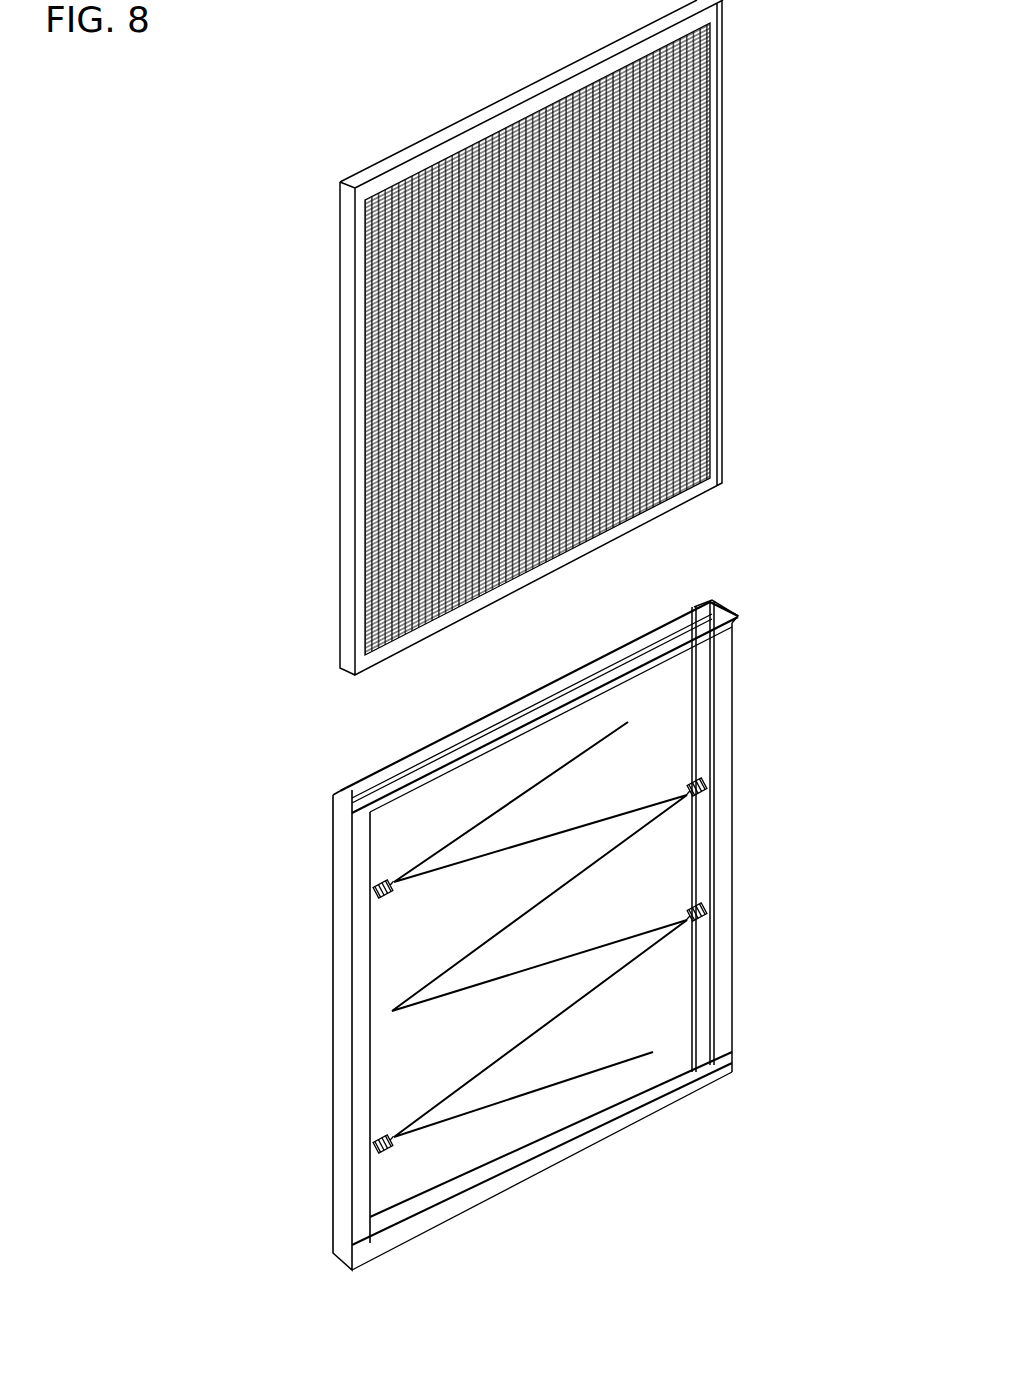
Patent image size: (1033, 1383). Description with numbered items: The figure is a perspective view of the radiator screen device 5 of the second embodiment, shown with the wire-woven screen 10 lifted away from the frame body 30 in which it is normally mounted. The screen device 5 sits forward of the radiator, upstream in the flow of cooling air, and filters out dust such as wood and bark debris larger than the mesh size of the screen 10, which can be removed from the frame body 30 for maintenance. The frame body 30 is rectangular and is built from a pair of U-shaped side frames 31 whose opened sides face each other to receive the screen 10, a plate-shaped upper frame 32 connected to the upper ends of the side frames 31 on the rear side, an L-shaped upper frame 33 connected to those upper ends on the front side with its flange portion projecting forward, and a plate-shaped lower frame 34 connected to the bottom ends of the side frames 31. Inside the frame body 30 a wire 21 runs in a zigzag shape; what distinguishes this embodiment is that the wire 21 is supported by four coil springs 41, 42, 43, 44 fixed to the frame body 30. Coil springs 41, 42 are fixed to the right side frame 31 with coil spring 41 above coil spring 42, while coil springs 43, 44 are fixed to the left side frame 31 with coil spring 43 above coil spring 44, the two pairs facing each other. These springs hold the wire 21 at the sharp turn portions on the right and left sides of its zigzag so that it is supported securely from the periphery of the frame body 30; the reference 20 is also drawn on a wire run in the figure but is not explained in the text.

The screen device 5 is at (295, 43).
The screen 10 is at (476, 106).
The first wire 20 is at (636, 845).
The wire 21 is at (592, 995).
The frame body 30 is at (312, 940).
The side frame 31 is at (720, 817).
The upper frame 32 is at (332, 796).
The upper frame 33 is at (633, 680).
The lower frame 34 is at (645, 1113).
The coil spring 41 is at (376, 884).
The coil spring 42 is at (383, 1158).
The coil spring 43 is at (702, 770).
The coil spring 44 is at (710, 930).